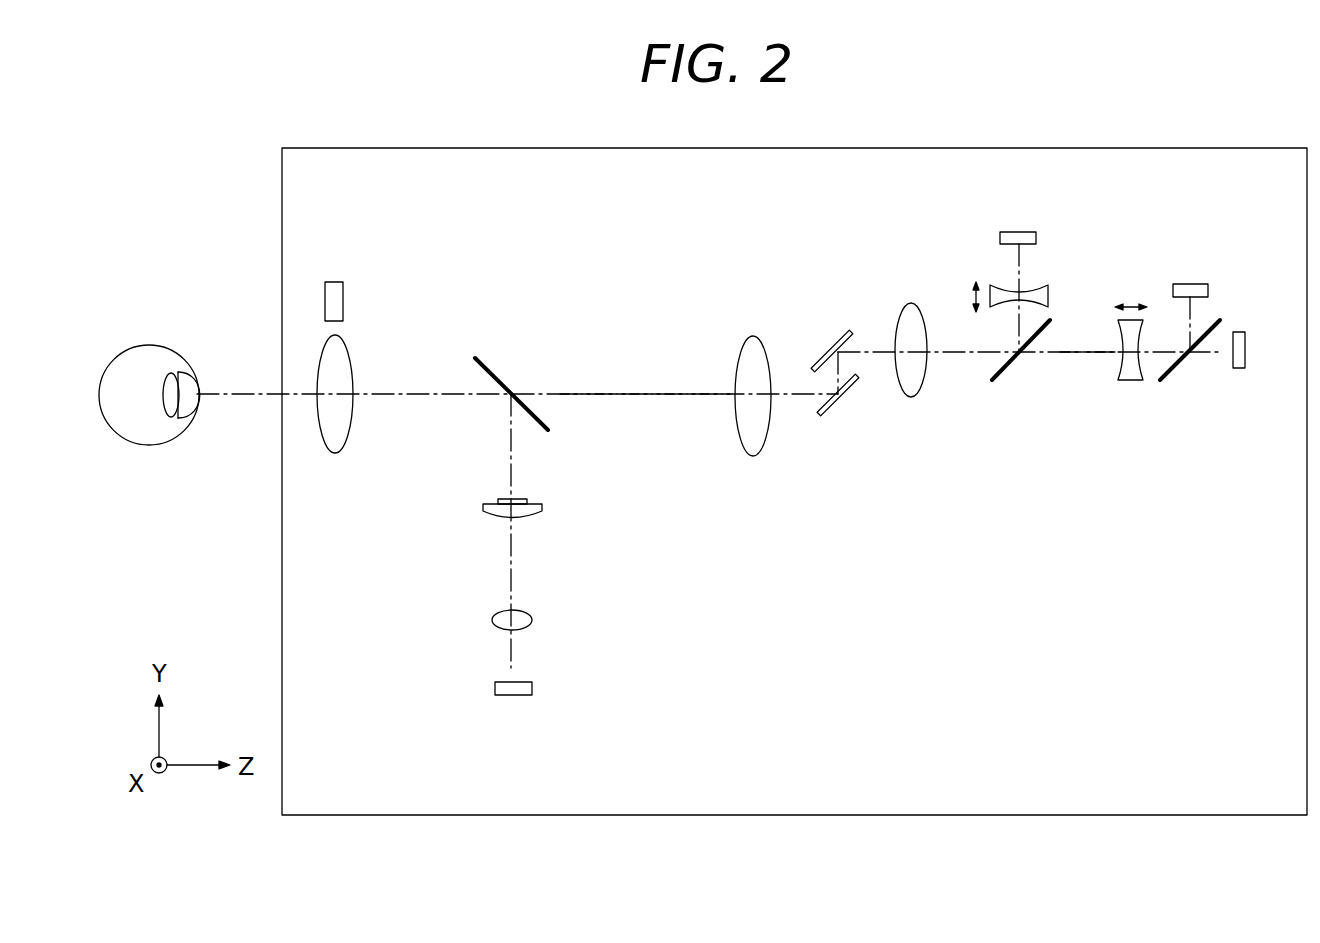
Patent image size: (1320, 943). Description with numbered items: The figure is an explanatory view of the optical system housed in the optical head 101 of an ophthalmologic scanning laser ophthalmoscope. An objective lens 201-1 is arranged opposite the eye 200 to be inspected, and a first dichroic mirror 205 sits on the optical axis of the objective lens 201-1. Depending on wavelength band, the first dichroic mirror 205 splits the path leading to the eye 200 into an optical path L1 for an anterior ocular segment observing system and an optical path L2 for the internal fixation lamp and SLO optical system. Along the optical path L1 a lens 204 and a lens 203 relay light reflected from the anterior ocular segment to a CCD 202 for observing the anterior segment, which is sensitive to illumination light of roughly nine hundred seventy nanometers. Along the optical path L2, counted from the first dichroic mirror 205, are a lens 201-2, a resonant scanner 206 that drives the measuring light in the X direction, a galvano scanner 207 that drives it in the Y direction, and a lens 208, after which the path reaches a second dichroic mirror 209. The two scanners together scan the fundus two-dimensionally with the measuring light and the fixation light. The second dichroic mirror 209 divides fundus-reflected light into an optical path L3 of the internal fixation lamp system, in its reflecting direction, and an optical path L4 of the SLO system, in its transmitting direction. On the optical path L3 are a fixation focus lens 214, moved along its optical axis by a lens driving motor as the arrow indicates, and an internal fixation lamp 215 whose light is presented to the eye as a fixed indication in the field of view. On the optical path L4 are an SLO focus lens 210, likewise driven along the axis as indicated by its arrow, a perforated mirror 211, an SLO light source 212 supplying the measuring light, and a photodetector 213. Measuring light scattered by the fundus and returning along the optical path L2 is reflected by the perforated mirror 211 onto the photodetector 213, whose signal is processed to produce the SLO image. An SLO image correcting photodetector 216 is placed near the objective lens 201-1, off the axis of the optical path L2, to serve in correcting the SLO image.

The optical head 101 is at (1027, 148).
The eye to be inspected 200 is at (153, 347).
The SLO image correcting photodetector 216 is at (343, 292).
The objective lens 201-1 is at (352, 370).
The first dichroic mirror 205 is at (497, 372).
The optical path of anterior ocular segment observing system L1 is at (510, 457).
The optical path of internal fixation lamp and SLO optical system L2 is at (640, 397).
The lens 204 is at (542, 508).
The lens 203 is at (533, 620).
The CCD for observing an anterior ocular segment 202 is at (533, 690).
The lens 201-2 is at (753, 458).
The resonant scanner 206 is at (846, 402).
The galvano scanner 207 is at (829, 346).
The lens 208 is at (908, 302).
The second dichroic mirror 209 is at (1021, 362).
The optical path of internal fixation lamp optical system L3 is at (1016, 249).
The fixation focus lens 214 is at (1048, 292).
The internal fixation lamp 215 is at (1018, 232).
The optical path of SLO optical system L4 is at (1092, 355).
The SLO focus lens 210 is at (1132, 381).
The perforated mirror 211 is at (1188, 372).
The photodetector 213 is at (1189, 284).
The SLO light source 212 is at (1239, 369).